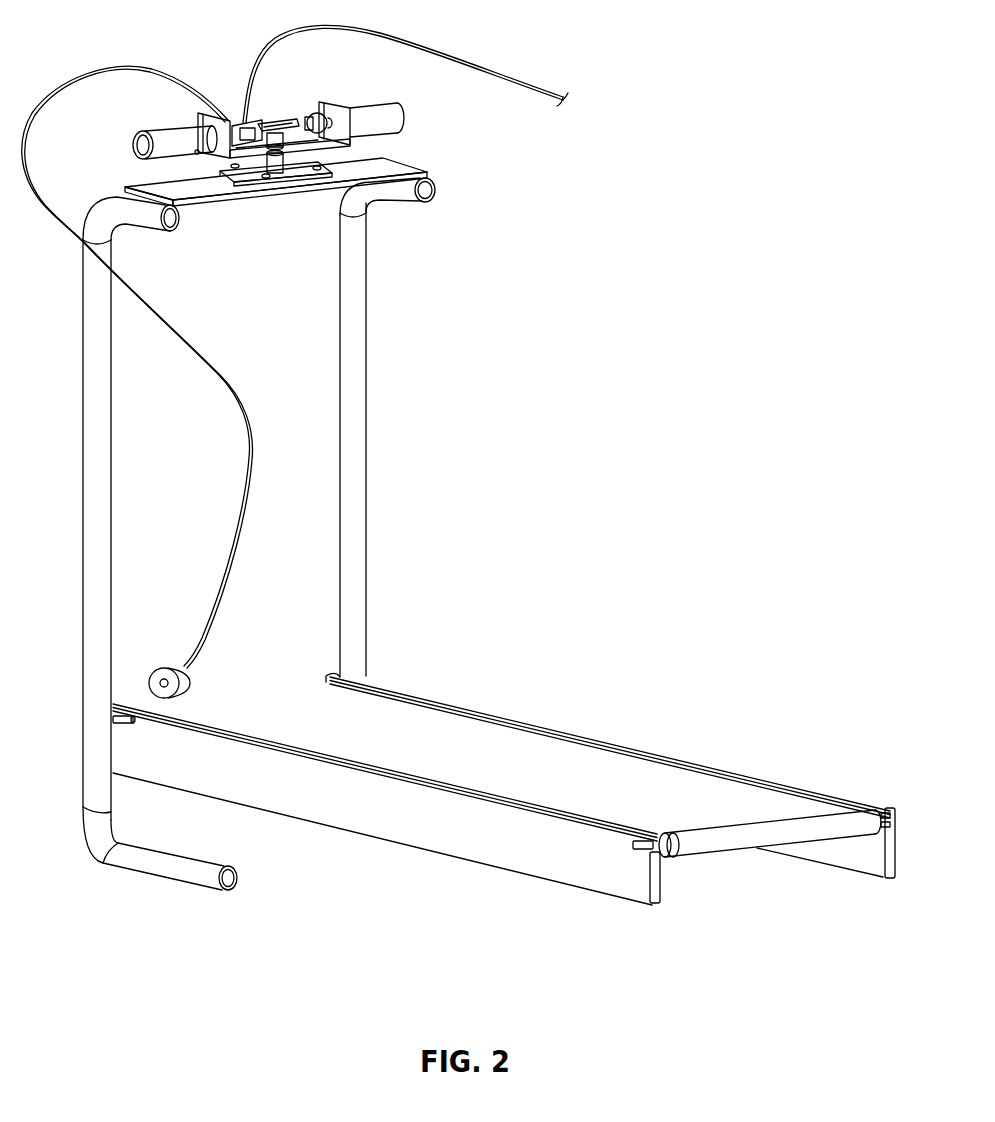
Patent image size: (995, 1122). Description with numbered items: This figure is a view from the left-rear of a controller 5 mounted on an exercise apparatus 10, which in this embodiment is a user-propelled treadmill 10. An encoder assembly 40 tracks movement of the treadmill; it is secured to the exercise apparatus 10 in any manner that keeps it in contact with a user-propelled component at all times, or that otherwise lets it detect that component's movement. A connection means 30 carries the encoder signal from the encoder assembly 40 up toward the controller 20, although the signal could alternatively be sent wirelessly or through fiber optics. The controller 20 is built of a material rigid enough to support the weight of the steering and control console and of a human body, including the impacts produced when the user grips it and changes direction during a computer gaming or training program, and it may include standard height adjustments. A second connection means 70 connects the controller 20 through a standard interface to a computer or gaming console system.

The controller 5 is at (405, 882).
The exercise apparatus 10 is at (558, 742).
The controller 20 is at (397, 139).
The connection means 30 is at (250, 423).
The encoder assembly 40 is at (193, 680).
The connection means 70 is at (483, 63).